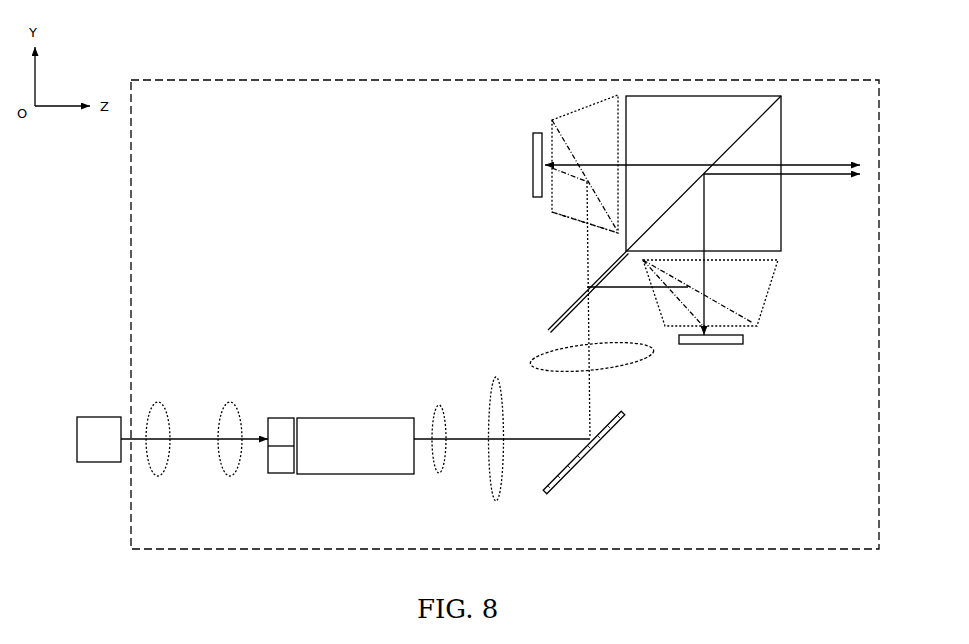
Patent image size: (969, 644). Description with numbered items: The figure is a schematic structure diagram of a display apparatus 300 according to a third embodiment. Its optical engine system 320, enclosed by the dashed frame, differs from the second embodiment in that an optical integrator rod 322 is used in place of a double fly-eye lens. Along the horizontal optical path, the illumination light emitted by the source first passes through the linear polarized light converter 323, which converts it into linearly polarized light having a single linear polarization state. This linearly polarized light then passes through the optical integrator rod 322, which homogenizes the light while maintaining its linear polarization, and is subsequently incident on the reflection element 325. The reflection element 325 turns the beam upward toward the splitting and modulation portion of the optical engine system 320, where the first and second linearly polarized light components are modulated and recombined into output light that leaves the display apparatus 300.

The display apparatus 300 is at (516, 48).
The optical engine system 320 is at (131, 290).
The optical integrator rod 322 is at (348, 418).
The linear polarized light converter 323 is at (282, 417).
The reflection element 325 is at (582, 457).